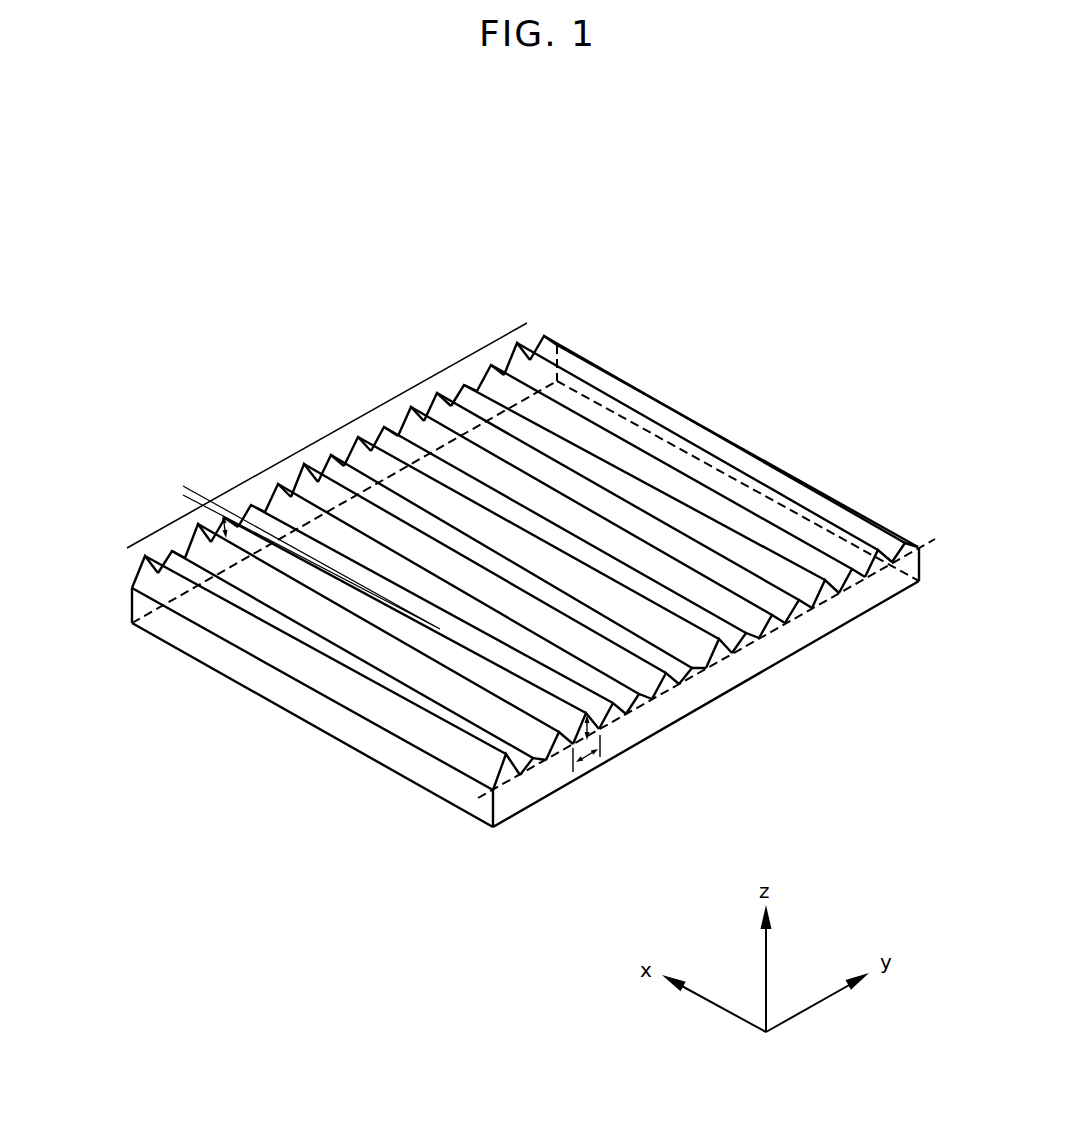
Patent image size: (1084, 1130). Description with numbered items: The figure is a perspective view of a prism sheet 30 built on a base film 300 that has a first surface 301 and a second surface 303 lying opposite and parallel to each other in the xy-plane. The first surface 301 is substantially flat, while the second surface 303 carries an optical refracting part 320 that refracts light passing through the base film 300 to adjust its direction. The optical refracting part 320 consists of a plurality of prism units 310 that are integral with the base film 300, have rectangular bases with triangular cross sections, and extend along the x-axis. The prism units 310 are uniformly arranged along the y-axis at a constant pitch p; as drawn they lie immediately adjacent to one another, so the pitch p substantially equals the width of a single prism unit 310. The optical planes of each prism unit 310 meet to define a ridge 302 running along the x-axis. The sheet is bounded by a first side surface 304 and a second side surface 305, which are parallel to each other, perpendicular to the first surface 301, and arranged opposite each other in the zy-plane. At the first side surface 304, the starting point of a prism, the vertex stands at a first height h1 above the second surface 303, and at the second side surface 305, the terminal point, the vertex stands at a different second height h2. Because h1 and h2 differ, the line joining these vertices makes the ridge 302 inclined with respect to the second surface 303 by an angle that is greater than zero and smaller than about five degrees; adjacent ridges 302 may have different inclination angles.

The prism sheet 30 is at (497, 593).
The base film 300 is at (497, 586).
The first surface 301 is at (298, 718).
The ridge 302 is at (458, 650).
The second surface 303 is at (929, 541).
The first side surface 304 is at (830, 628).
The second side surface 305 is at (131, 605).
The prism unit 310 is at (525, 584).
The optical refracting part 320 is at (318, 440).
The first height h1 is at (560, 716).
The second height h2 is at (200, 523).
The pitch p is at (592, 770).